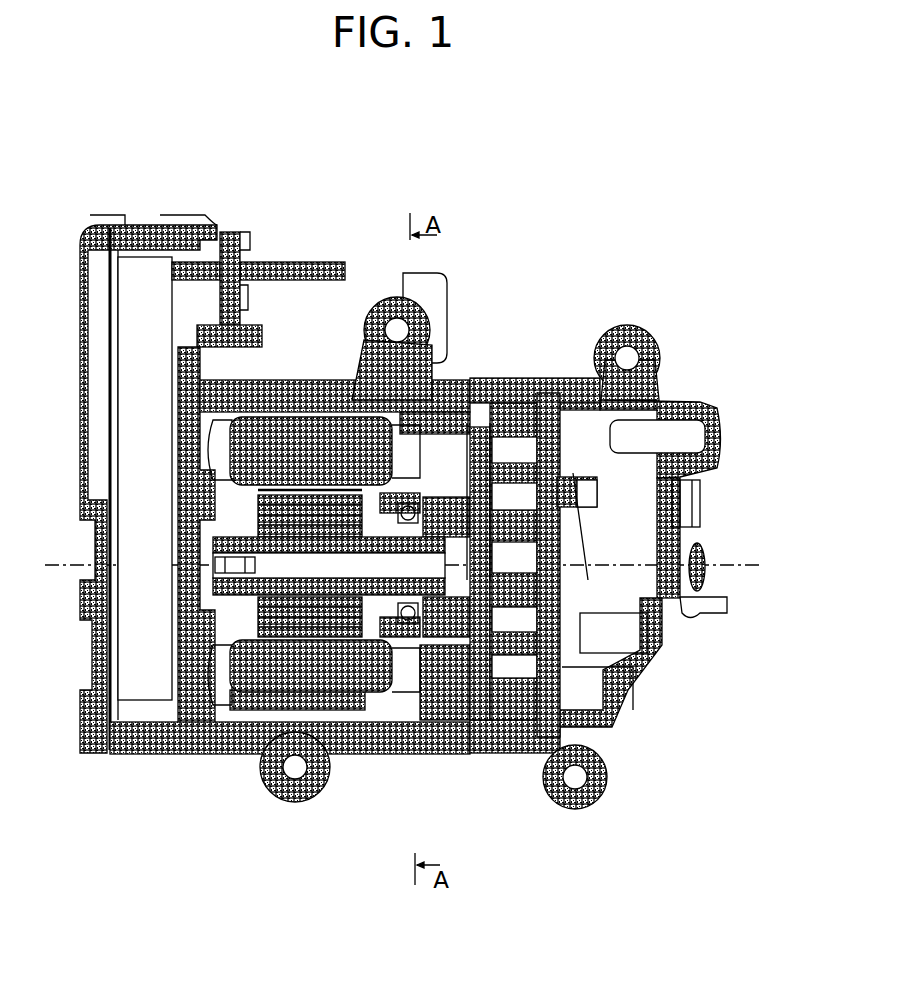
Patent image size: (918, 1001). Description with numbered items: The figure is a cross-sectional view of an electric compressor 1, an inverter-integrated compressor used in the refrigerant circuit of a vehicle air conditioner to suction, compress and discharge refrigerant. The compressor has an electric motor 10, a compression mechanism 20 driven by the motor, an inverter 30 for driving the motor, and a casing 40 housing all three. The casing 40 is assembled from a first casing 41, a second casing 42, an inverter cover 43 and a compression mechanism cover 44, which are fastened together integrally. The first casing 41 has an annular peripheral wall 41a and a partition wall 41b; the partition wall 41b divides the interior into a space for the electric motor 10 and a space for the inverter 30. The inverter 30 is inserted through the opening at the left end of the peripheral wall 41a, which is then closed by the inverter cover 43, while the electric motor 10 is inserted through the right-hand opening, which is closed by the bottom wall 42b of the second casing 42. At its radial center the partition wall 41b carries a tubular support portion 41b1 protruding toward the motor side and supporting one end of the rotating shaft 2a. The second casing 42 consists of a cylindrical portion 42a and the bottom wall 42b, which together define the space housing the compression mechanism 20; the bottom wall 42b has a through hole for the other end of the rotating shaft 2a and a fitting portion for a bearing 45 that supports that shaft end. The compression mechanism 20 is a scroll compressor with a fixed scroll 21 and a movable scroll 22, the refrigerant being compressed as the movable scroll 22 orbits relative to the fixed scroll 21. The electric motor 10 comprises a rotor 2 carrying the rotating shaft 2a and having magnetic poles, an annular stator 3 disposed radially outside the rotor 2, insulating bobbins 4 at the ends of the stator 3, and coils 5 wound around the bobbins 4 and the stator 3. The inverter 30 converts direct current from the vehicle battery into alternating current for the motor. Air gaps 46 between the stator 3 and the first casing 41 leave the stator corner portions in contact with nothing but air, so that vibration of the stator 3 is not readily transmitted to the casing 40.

The electric compressor 1 is at (52, 188).
The electric motor 10 is at (338, 532).
The rotor 2 is at (320, 475).
The rotating shaft 2a is at (350, 520).
The stator 3 is at (340, 640).
The bobbins 4 is at (233, 718).
The coils 5 is at (325, 690).
The compression mechanism 20 is at (528, 492).
The fixed scroll 21 is at (523, 463).
The movable scroll 22 is at (483, 430).
The inverter 30 is at (148, 255).
The casing 40 is at (416, 573).
The first casing 41 is at (287, 573).
The peripheral wall 41a is at (392, 750).
The partition wall 41b is at (213, 727).
The support portion 41b1 is at (220, 710).
The second casing 42 is at (502, 628).
The cylindrical portion 42a is at (493, 720).
The bottom wall 42b is at (452, 735).
The inverter cover 43 is at (98, 757).
The compression mechanism cover 44 is at (617, 727).
The bearing 45 is at (420, 720).
The air gaps 46 is at (272, 748).